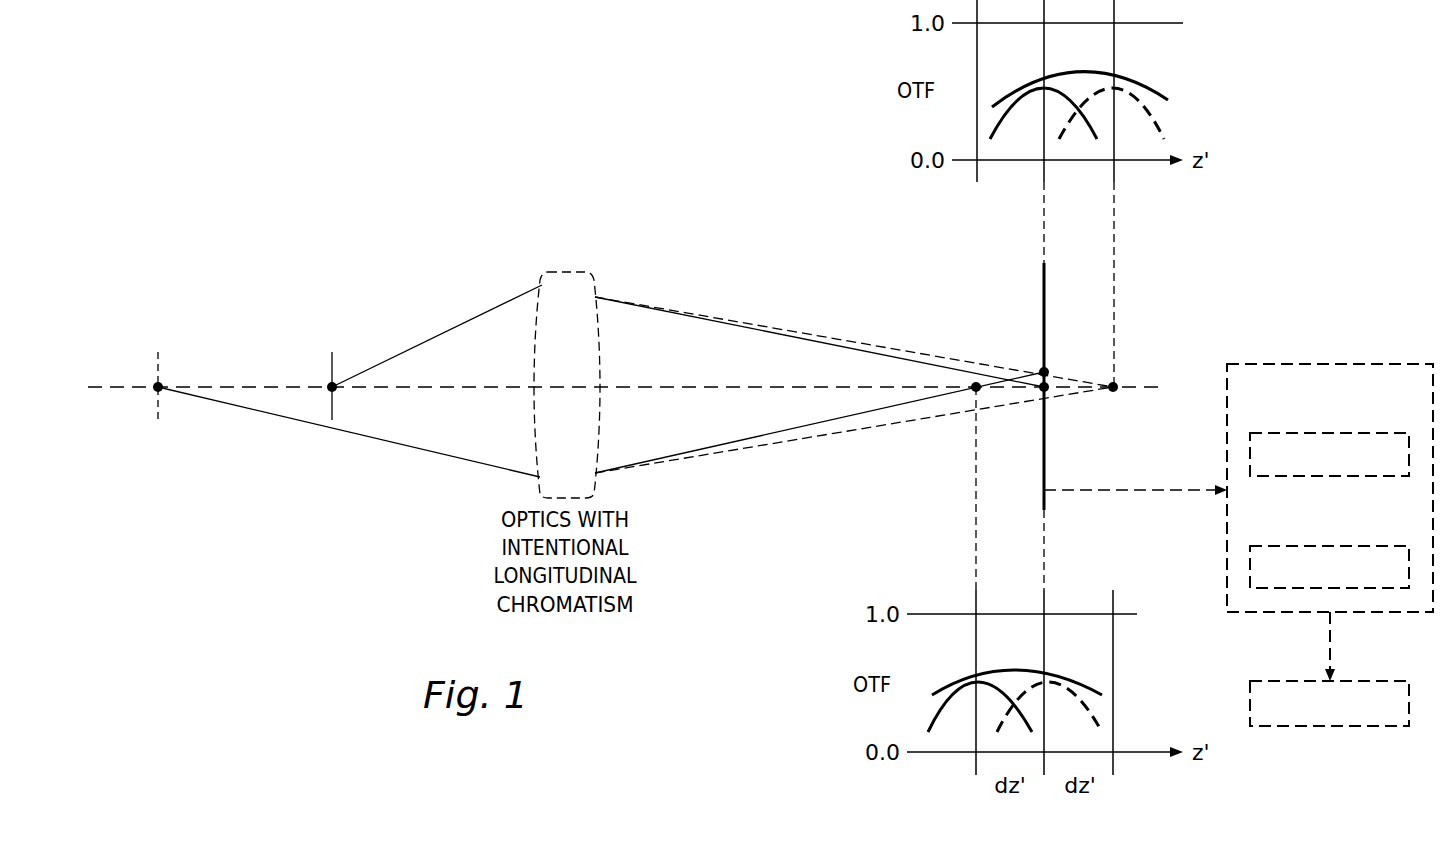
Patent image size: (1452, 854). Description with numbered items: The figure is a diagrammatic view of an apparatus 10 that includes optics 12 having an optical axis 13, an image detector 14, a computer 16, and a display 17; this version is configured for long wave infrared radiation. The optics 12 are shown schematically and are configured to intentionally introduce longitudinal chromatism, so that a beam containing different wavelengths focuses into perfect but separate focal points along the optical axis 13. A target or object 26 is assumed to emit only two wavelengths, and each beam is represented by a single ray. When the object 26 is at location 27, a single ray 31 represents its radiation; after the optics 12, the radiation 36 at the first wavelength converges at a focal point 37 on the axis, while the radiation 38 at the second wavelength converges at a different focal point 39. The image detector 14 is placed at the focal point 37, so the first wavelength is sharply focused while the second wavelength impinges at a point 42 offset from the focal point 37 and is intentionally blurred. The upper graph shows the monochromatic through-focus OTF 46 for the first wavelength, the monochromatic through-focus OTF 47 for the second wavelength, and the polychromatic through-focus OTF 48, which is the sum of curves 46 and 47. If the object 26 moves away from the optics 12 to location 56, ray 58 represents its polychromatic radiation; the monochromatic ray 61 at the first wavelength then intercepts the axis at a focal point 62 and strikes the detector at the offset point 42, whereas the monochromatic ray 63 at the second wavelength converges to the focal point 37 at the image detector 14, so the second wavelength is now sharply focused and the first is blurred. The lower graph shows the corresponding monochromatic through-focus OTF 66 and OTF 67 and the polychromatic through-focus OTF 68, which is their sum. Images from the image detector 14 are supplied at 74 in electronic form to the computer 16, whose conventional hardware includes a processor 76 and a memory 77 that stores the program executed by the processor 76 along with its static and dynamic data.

The apparatus 10 is at (390, 119).
The optics 12 is at (565, 272).
The optical axis 13 is at (644, 385).
The image detector 14 is at (1047, 458).
The computer 16 is at (1346, 354).
The display 17 is at (1336, 728).
The object 26 is at (160, 352).
The location 27 is at (326, 380).
The ray 31 is at (470, 320).
The radiation at wavelength lambda-one 36 is at (804, 336).
The focal point 37 is at (1050, 393).
The radiation at wavelength lambda-two 38 is at (876, 344).
The focal point 39 is at (1120, 382).
The point 42 is at (1050, 370).
The monochromatic through-focus OTF 46 is at (992, 122).
The monochromatic through-focus OTF 47 is at (1157, 118).
The polychromatic through-focus OTF 48 is at (1147, 88).
The location 56 is at (152, 380).
The ray 58 is at (412, 447).
The monochromatic ray of radiation at wavelength lambda-one 61 is at (804, 428).
The focal point 62 is at (970, 380).
The monochromatic ray of radiation at wavelength lambda-two 63 is at (873, 428).
The monochromatic through-focus OTF 66 is at (940, 706).
The monochromatic through-focus OTF 67 is at (1105, 712).
The polychromatic through-focus OTF 68 is at (945, 686).
The electronic image supply 74 is at (1140, 492).
The processor 76 is at (1300, 478).
The memory 77 is at (1361, 545).